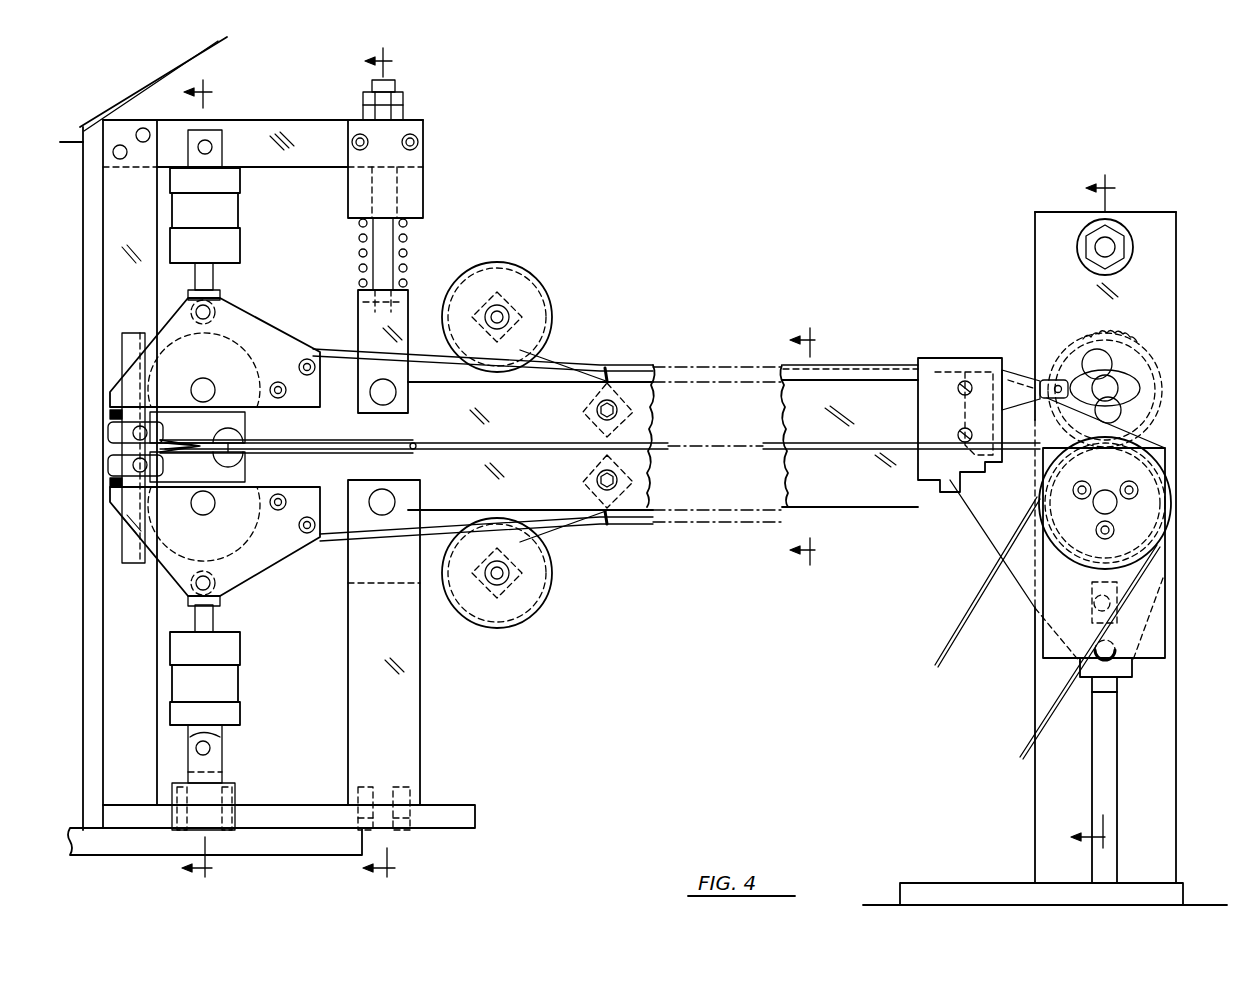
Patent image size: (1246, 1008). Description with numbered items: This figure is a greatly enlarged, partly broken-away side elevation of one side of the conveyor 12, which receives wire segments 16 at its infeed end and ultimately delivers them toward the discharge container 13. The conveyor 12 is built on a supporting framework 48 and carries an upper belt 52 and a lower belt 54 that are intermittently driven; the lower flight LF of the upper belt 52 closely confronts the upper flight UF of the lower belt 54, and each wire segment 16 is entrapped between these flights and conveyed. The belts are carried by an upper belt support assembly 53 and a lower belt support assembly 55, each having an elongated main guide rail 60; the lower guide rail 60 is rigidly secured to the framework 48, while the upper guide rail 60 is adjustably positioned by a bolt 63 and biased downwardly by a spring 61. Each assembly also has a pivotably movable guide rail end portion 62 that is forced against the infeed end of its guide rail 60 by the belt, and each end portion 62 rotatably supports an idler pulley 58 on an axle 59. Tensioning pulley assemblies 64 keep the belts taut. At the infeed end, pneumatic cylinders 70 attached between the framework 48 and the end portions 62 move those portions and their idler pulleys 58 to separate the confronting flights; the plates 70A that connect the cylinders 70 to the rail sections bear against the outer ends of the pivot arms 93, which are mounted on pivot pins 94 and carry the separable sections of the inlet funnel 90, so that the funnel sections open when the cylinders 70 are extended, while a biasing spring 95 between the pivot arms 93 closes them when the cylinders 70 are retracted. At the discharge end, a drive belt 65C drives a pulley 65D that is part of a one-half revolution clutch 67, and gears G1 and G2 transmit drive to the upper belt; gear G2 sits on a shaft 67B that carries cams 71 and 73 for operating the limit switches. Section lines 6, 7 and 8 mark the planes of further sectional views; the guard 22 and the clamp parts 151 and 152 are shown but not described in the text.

The guard rail 22 is at (225, 42).
The section line 6 is at (194, 484).
The section line 7 is at (376, 467).
The section line 8 is at (802, 445).
The discharge container 13 is at (1084, 512).
The conveyor 12 is at (893, 196).
The pneumatic cylinder 70 is at (242, 208).
The plate 70A is at (253, 311).
The idler pulley 58 is at (273, 337).
The axle 59 is at (196, 385).
The pivot arm 93 is at (112, 415).
The pivot pin 94 is at (130, 433).
The biasing spring 95 is at (130, 448).
The inlet funnel 90 is at (234, 494).
The guide rail end portion 62 is at (316, 434).
The bolt 63 is at (392, 233).
The spring 61 is at (405, 255).
The tensioning pulley assembly 64 is at (548, 268).
The upper belt 52 is at (645, 358).
The upper belt support assembly 53 is at (605, 363).
The lower belt 54 is at (610, 533).
The lower belt support assembly 55 is at (648, 527).
The main guide rail 60 is at (532, 415).
The wire segment 16 is at (416, 445).
The lower flight LF is at (663, 445).
The upper flight UF is at (663, 451).
The clamp block 151 is at (970, 330).
The clamp wedge 152 is at (1068, 375).
The gear G2 is at (1133, 339).
The cam 71 is at (1140, 388).
The cam 73 is at (1112, 363).
The shaft 67B is at (1112, 392).
The one-half revolution clutch 67 is at (1157, 552).
The gear G1 is at (1157, 467).
The pulley 65D is at (1173, 522).
The drive belt 65C is at (966, 612).
The framework 48 is at (463, 803).